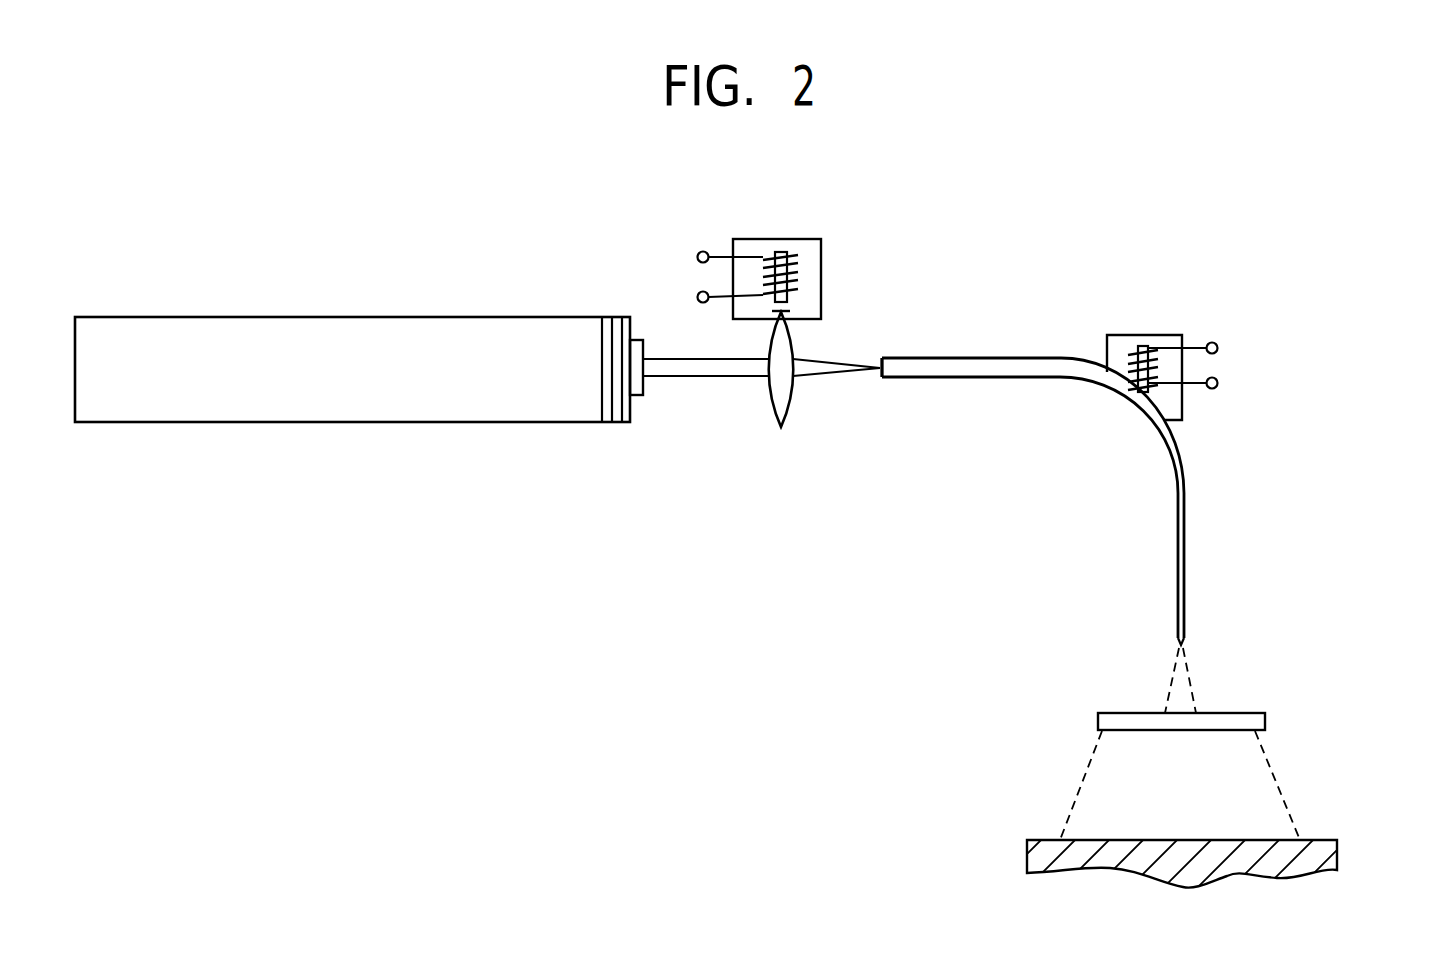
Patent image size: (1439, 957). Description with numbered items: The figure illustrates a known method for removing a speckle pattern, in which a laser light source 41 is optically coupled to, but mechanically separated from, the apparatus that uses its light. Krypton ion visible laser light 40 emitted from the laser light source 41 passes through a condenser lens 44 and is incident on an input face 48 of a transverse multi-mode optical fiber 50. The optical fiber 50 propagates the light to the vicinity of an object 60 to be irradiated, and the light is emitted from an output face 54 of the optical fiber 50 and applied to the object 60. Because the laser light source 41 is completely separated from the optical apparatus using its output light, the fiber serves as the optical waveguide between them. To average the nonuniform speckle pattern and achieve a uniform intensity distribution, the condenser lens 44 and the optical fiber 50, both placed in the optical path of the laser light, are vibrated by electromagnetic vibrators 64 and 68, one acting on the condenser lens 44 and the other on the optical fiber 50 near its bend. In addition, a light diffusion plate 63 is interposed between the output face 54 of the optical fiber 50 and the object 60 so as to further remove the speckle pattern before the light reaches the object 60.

The laser light source 41 is at (399, 315).
The laser light 40 is at (686, 380).
The condenser lens 44 is at (781, 428).
The input face 48 is at (882, 381).
The transverse multi-mode optical fiber 50 is at (990, 356).
The output face 54 is at (1186, 646).
The light diffusion plate 63 is at (1265, 720).
The object 60 is at (1337, 862).
The electromagnetic vibrator 64 is at (821, 272).
The electromagnetic vibrator 68 is at (1147, 335).